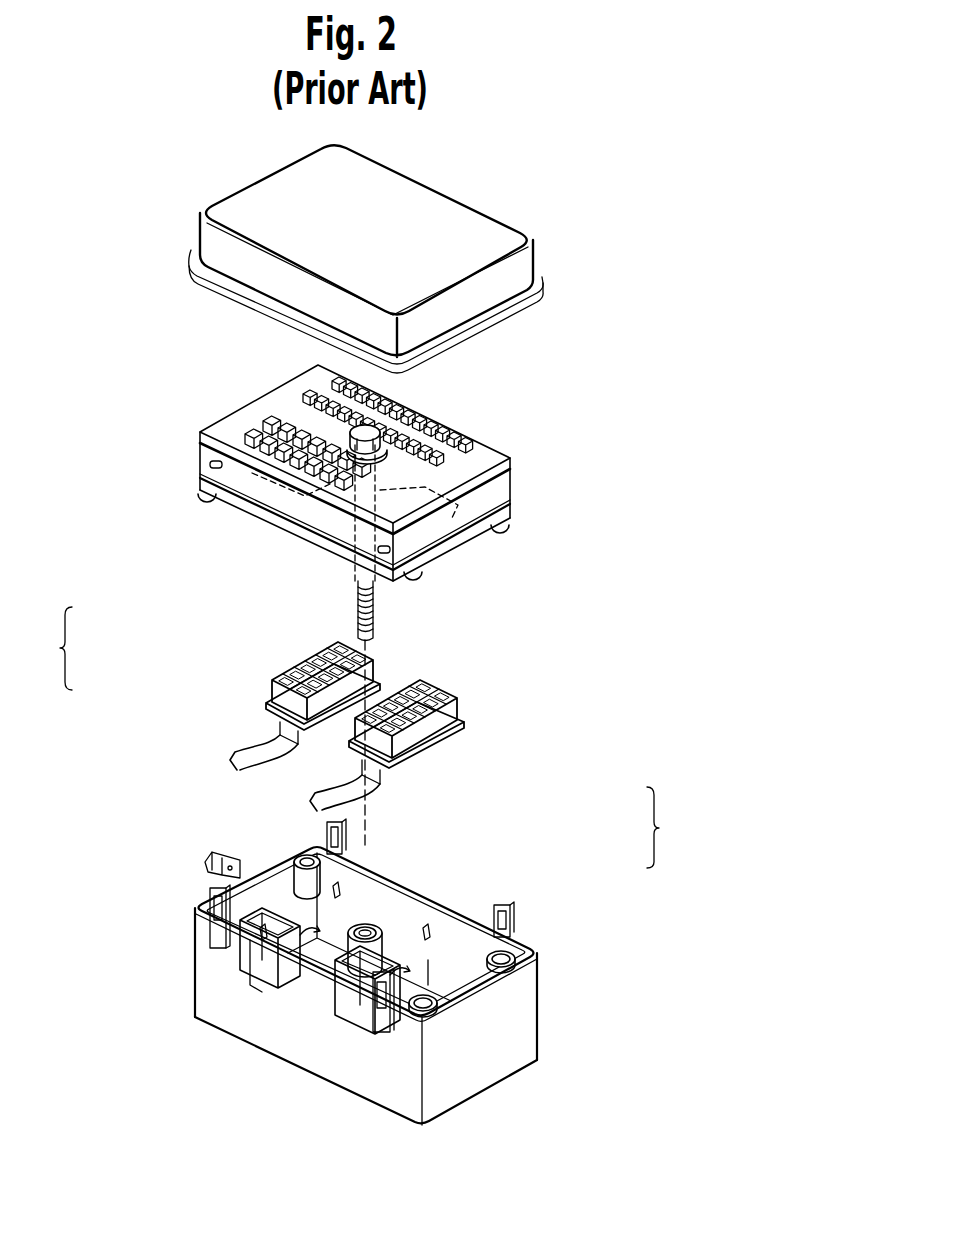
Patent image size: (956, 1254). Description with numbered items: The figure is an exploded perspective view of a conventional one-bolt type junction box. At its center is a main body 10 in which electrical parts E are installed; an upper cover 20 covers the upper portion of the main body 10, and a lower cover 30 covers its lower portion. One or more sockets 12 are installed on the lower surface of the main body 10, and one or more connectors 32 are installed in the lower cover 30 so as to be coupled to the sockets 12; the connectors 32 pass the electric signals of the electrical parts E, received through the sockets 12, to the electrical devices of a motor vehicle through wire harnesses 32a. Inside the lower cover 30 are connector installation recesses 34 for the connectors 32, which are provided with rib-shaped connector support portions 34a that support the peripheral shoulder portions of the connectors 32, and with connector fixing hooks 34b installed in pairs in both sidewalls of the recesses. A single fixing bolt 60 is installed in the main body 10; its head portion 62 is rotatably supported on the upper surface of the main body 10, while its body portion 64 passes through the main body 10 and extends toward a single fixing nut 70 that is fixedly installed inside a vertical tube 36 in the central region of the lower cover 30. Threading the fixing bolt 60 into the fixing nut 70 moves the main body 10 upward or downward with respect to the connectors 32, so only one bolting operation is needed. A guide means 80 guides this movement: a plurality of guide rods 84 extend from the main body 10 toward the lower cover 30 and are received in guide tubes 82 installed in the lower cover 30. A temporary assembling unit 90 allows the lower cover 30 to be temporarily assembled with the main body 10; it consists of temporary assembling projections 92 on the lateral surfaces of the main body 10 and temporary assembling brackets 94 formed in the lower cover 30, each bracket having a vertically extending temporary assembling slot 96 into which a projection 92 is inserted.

The main body 10 is at (200, 448).
The socket 12 is at (262, 417).
The upper cover 20 is at (200, 240).
The lower cover 30 is at (205, 978).
The connector 32 is at (275, 690).
The wire harness 32a is at (256, 744).
The connector installation recess 34 is at (295, 945).
The connector support portion 34a is at (430, 978).
The connector fixing hook 34b is at (230, 853).
The vertical tube 36 is at (370, 918).
The fixing bolt 60 is at (352, 537).
The head portion 62 is at (402, 404).
The body portion 64 is at (357, 572).
The fixing nut 70 is at (387, 930).
The guide means 80 is at (666, 827).
The guide tube 82 is at (449, 1009).
The guide rod 84 is at (504, 531).
The temporary assembling unit 90 is at (54, 648).
The temporary assembling projection 92 is at (383, 554).
The temporary assembling bracket 94 is at (213, 935).
The temporary assembling slot 96 is at (205, 903).
The electrical part E is at (260, 432).